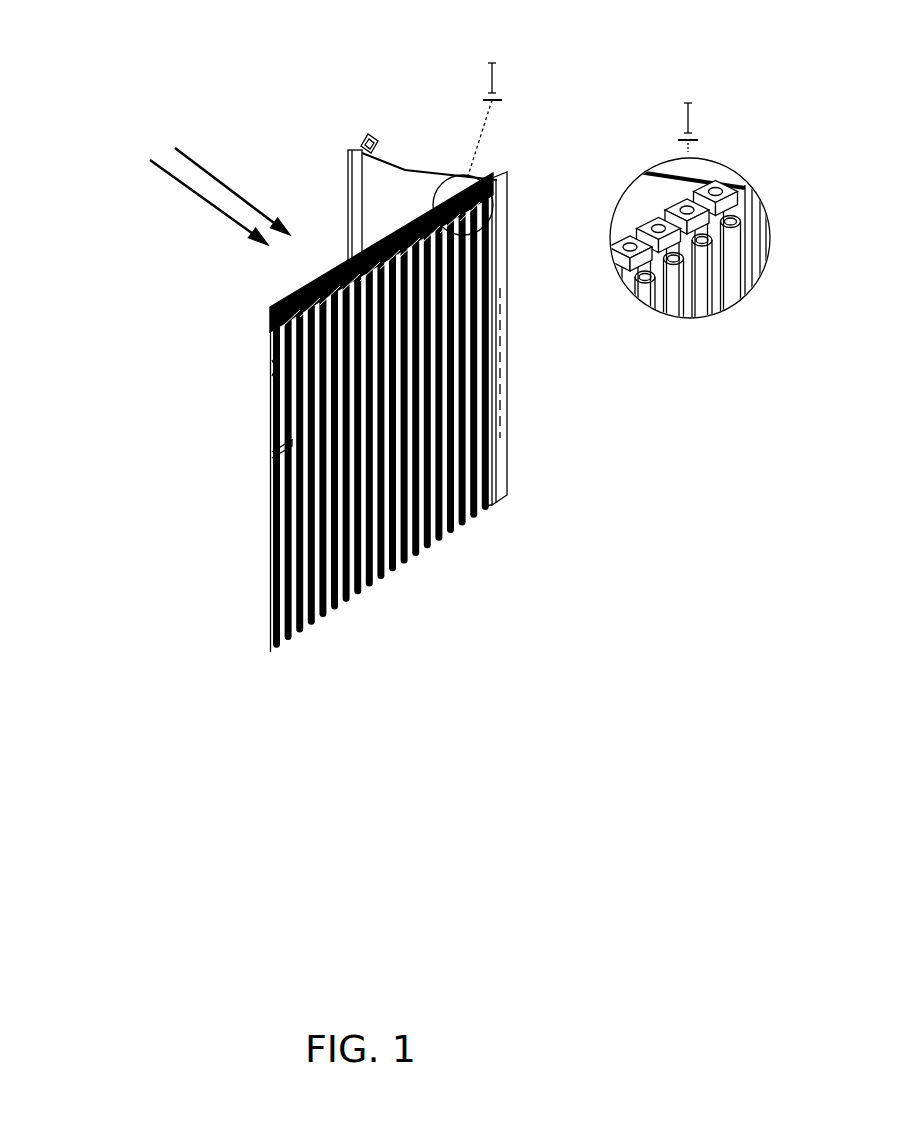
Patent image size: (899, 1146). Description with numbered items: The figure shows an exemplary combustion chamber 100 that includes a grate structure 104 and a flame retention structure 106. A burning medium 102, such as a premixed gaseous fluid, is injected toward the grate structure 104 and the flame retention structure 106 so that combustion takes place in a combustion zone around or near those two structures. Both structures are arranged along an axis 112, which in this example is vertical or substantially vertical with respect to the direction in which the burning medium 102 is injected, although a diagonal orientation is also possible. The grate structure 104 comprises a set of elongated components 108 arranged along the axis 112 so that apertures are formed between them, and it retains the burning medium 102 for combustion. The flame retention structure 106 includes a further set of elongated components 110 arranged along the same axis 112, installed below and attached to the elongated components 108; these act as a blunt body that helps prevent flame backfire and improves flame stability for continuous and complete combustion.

The combustion chamber 100 is at (82, 30).
The burning medium 102 is at (207, 187).
The grate structure 104 is at (380, 240).
The flame retention structure 106 is at (458, 198).
The elongated components 108 is at (716, 190).
The elongated components 110 is at (740, 296).
The axis 112 is at (500, 393).